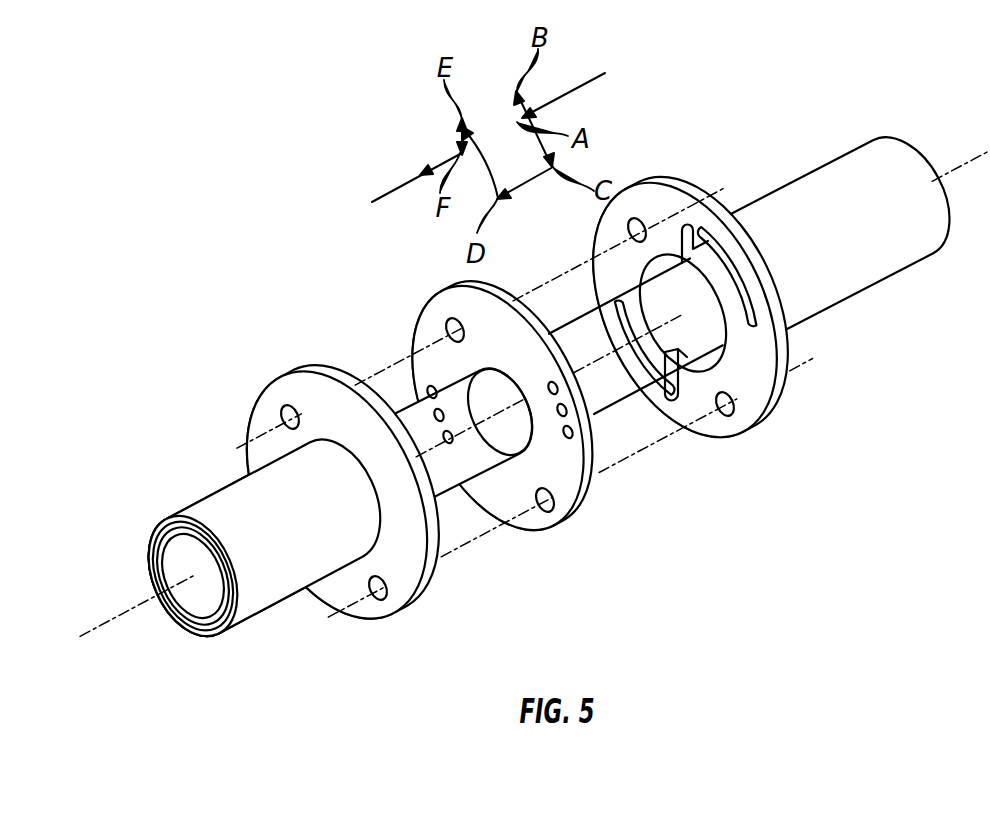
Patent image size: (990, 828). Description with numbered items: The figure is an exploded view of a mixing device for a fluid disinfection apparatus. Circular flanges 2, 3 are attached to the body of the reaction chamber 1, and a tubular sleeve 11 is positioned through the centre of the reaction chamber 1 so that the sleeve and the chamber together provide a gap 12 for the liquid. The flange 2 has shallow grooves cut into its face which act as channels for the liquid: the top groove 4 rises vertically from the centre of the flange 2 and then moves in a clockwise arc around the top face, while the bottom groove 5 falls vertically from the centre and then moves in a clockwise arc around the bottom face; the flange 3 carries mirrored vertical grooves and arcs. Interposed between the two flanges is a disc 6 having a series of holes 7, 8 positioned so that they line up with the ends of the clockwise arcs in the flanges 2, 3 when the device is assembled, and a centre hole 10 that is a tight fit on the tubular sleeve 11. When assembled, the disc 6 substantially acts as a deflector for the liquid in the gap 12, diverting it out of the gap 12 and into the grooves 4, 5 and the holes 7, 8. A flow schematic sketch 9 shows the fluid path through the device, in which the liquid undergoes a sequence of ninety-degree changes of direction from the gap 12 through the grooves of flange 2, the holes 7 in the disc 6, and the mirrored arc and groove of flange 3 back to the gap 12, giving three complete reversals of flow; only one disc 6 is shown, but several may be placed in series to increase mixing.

The reaction chamber 1 is at (865, 272).
The flange 2 is at (747, 378).
The flange 3 is at (400, 578).
The top groove 4 is at (713, 257).
The bottom groove 5 is at (663, 398).
The disc 6 is at (563, 487).
The holes 7 is at (571, 430).
The holes 8 is at (427, 392).
The flow schematic sketch 9 is at (392, 187).
The centre hole 10 is at (487, 393).
The tubular sleeve 11 is at (587, 347).
The gap 12 is at (652, 267).